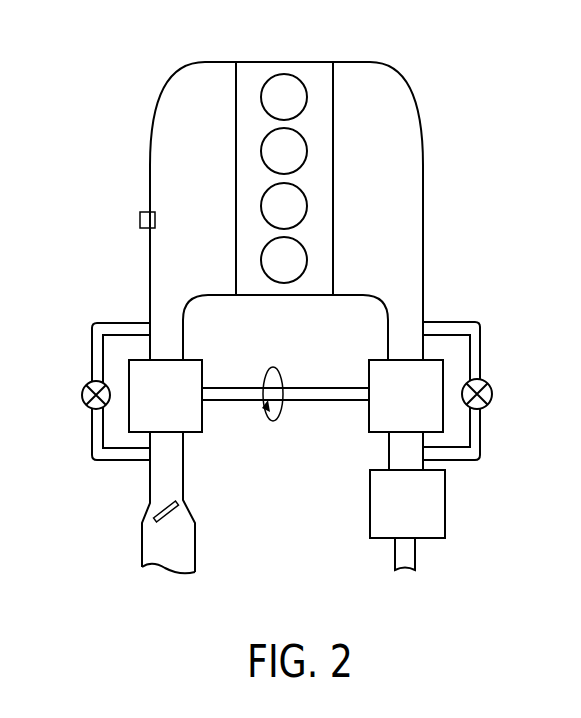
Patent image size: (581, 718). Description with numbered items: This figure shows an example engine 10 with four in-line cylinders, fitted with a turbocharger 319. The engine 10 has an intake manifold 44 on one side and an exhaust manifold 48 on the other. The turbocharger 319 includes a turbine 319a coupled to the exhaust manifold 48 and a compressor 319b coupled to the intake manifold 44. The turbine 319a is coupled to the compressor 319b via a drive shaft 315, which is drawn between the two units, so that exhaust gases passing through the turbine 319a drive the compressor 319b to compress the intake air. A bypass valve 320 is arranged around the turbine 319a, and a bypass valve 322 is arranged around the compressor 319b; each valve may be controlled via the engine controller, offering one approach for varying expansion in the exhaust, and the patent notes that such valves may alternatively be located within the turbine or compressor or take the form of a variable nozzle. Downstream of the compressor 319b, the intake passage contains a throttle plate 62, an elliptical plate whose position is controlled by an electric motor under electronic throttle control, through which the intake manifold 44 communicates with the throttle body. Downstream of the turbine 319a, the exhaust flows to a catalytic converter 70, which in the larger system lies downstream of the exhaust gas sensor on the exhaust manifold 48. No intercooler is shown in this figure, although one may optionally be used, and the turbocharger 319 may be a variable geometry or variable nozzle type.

The engine 10 is at (290, 62).
The intake manifold 44 is at (202, 196).
The exhaust manifold 48 is at (387, 196).
The throttle plate 62 is at (163, 510).
The catalytic converter 70 is at (417, 514).
The drive shaft 315 is at (313, 386).
The turbocharger 319 is at (286, 416).
The turbine 319a is at (427, 407).
The compressor 319b is at (186, 407).
The bypass valve 320 is at (493, 392).
The bypass valve 322 is at (81, 394).